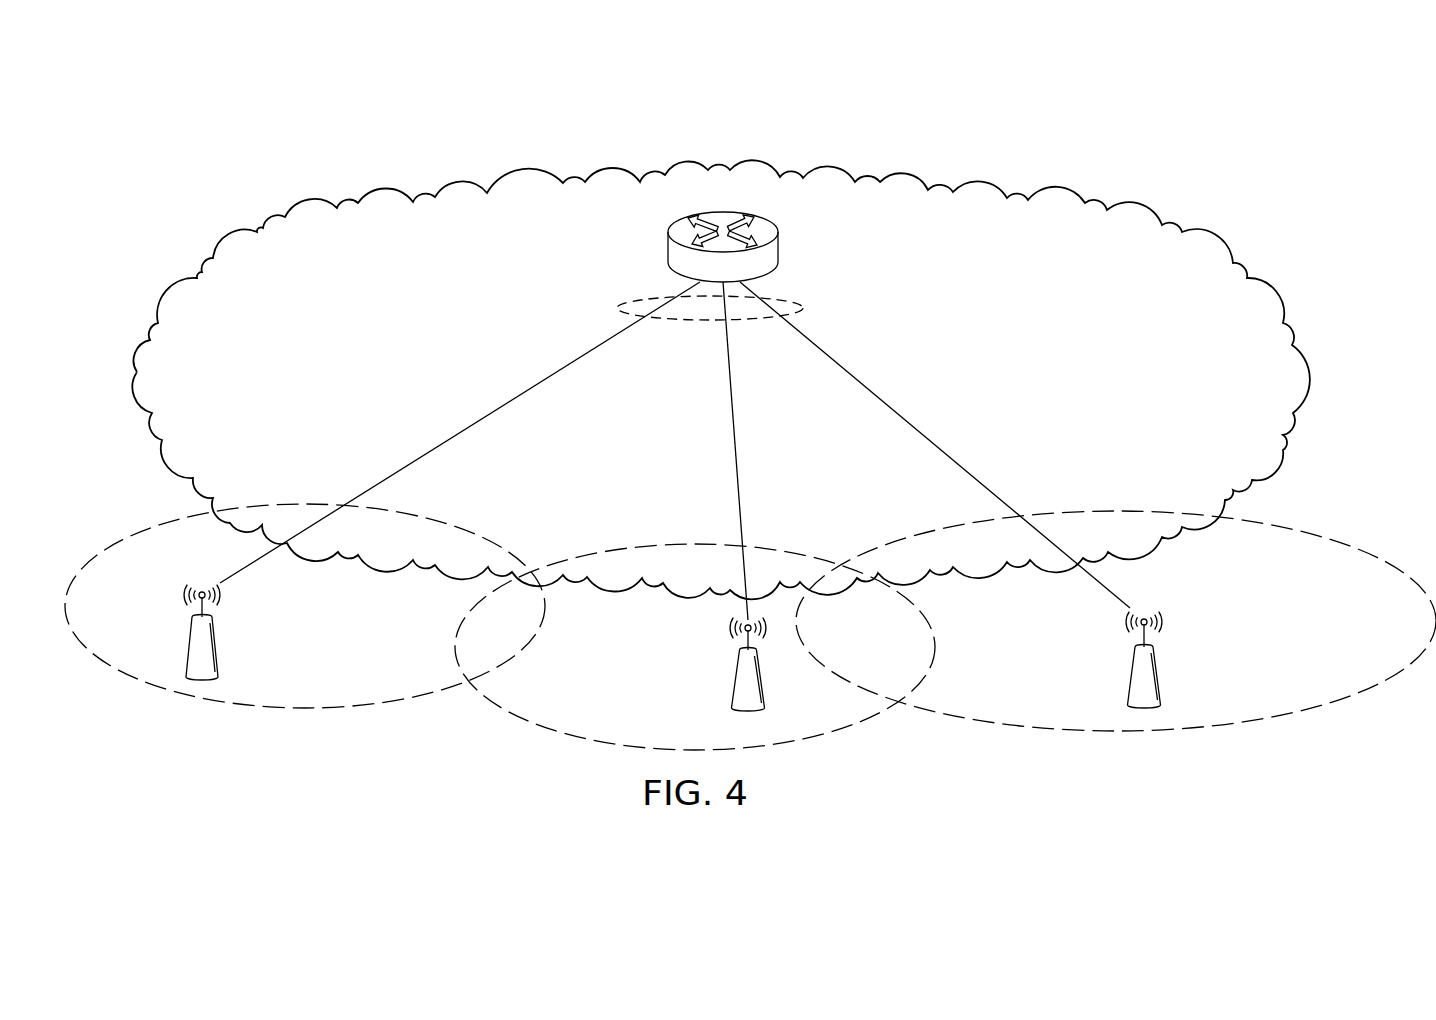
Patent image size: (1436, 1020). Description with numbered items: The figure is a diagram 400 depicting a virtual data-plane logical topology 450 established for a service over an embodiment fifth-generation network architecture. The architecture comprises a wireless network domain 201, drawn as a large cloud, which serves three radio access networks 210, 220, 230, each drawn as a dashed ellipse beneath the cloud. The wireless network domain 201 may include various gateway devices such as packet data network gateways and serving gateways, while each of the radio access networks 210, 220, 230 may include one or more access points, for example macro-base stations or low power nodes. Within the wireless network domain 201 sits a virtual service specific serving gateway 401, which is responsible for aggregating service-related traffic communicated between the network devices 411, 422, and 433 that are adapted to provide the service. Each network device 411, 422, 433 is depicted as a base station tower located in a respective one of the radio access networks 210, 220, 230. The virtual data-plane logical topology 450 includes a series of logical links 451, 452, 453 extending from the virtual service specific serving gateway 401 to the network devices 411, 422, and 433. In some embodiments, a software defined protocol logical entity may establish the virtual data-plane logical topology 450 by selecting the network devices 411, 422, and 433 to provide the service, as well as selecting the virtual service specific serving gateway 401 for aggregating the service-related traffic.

The diagram 400 is at (906, 128).
The wireless network domain 201 is at (609, 160).
The virtual service specific serving gateway 401 is at (780, 242).
The virtual data-plane logical topology 450 is at (614, 309).
The logical link 451 is at (543, 378).
The logical link 452 is at (727, 352).
The logical link 453 is at (833, 357).
The network device 411 is at (186, 645).
The network device 422 is at (733, 677).
The network device 433 is at (1159, 675).
The radio access network 210 is at (222, 710).
The radio access network 220 is at (582, 744).
The radio access network 230 is at (1217, 740).